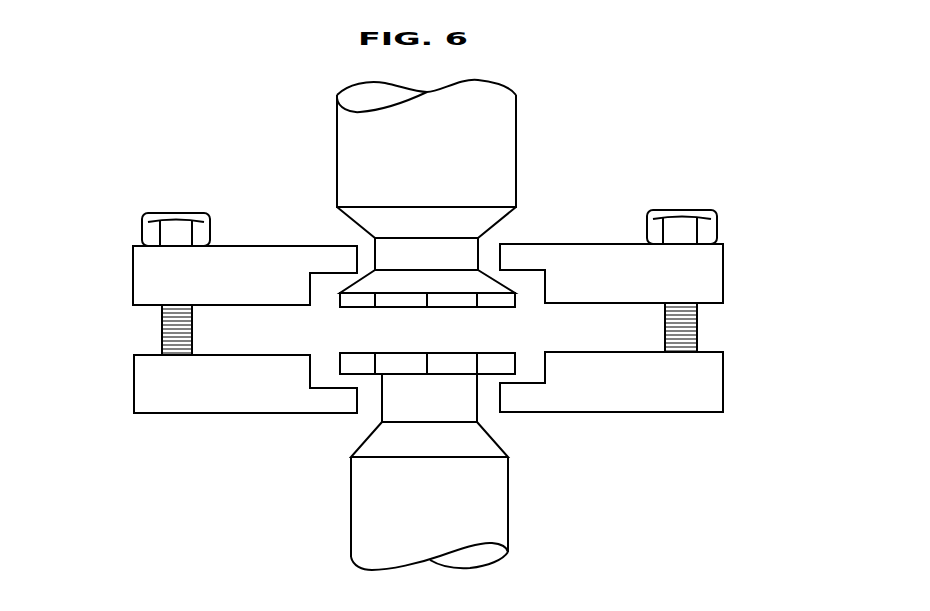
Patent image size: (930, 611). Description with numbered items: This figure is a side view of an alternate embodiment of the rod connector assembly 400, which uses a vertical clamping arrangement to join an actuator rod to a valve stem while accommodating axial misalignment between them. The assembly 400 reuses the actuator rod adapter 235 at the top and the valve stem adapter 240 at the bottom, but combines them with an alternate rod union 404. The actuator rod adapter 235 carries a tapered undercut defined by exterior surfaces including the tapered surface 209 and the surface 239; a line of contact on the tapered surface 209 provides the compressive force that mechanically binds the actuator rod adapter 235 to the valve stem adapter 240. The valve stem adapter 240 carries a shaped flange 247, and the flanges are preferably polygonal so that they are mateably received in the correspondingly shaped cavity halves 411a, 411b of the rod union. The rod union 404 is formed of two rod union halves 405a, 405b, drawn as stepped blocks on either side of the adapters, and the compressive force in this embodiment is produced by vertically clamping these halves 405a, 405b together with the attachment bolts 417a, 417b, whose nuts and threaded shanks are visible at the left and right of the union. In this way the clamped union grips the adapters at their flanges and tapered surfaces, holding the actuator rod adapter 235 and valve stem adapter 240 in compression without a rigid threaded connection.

The rod connector assembly 400 is at (160, 137).
The actuator rod adapter 235 is at (524, 144).
The tapered surface 209 is at (482, 268).
The exterior surface 239 is at (344, 296).
The shaped flange 247 is at (340, 362).
The valve stem adapter 240 is at (520, 512).
The alternate rod union 404 is at (126, 283).
The rod union half 405a is at (723, 267).
The rod union half 405b is at (724, 383).
The attachment bolt 417a is at (176, 213).
The attachment bolt 417b is at (685, 210).
The cavity half 411a is at (537, 287).
The cavity half 411b is at (535, 365).